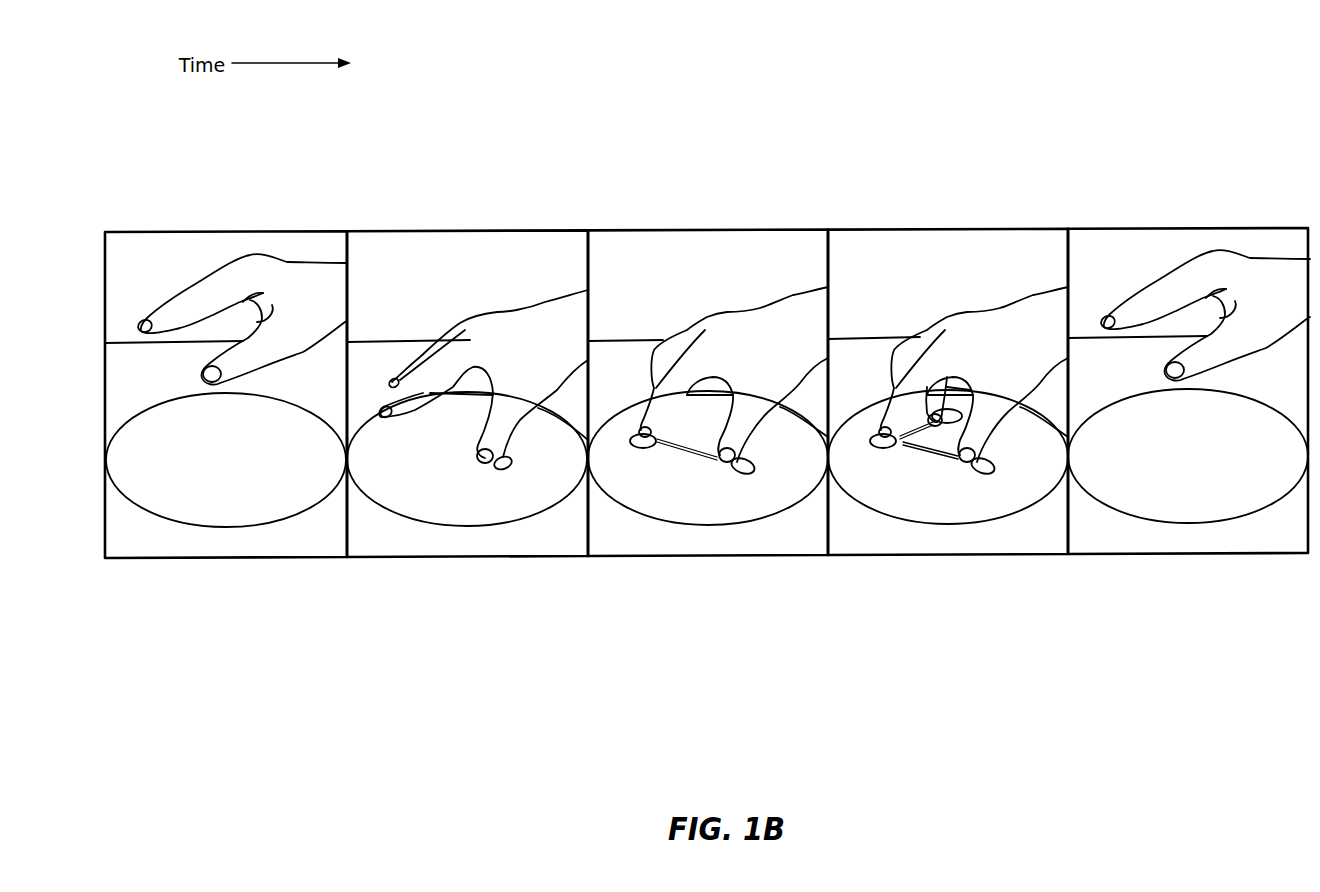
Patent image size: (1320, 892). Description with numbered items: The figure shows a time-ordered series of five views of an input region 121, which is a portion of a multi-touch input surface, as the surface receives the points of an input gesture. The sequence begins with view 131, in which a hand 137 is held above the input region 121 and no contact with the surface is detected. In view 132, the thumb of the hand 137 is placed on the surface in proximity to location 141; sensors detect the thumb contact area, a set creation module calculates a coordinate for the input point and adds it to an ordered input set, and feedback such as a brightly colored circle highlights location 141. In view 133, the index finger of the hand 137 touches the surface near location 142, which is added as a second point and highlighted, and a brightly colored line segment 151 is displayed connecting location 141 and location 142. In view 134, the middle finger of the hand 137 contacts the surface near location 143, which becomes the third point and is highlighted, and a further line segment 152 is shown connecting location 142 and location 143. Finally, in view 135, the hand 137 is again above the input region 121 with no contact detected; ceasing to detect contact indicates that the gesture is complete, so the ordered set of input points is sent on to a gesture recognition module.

The input region 121 is at (1235, 650).
The view 131 is at (193, 231).
The view 132 is at (433, 231).
The view 133 is at (672, 230).
The view 134 is at (910, 229).
The view 135 is at (1148, 226).
The hand 137 is at (1222, 270).
The location 141 is at (1055, 703).
The location 142 is at (882, 450).
The location 143 is at (945, 424).
The line segment 151 is at (695, 466).
The line segment 152 is at (916, 432).